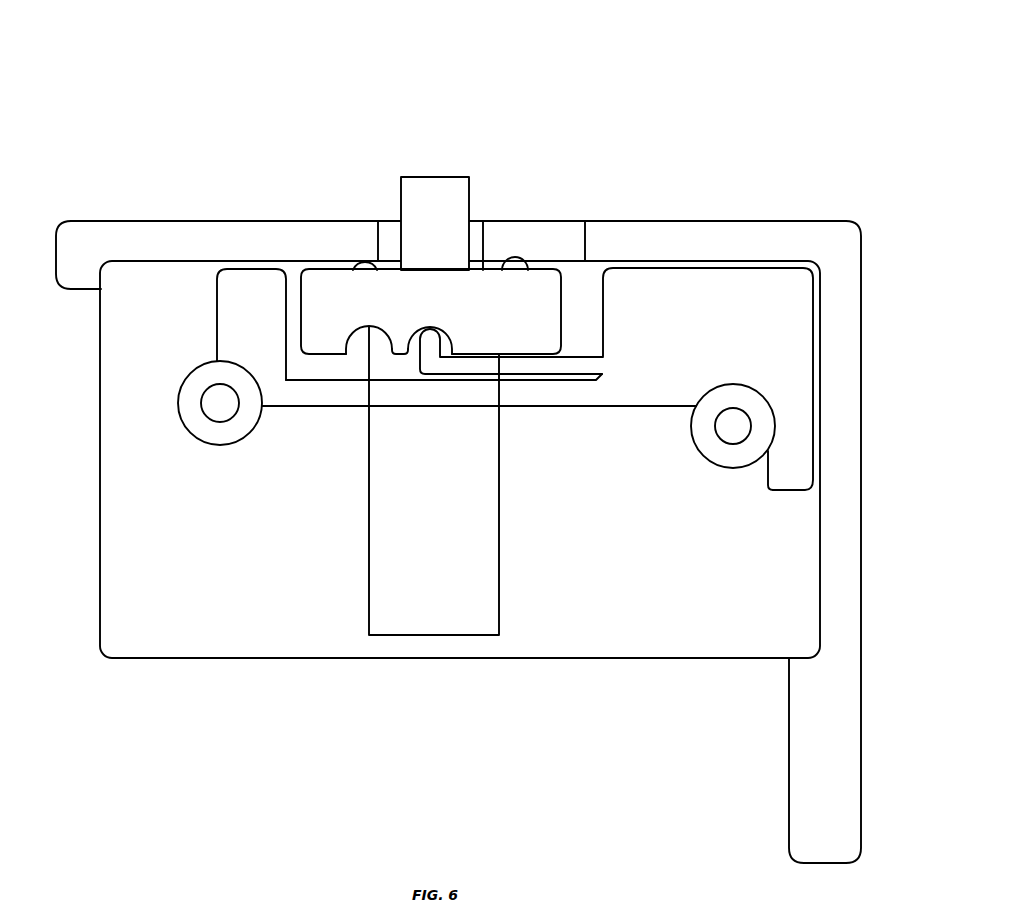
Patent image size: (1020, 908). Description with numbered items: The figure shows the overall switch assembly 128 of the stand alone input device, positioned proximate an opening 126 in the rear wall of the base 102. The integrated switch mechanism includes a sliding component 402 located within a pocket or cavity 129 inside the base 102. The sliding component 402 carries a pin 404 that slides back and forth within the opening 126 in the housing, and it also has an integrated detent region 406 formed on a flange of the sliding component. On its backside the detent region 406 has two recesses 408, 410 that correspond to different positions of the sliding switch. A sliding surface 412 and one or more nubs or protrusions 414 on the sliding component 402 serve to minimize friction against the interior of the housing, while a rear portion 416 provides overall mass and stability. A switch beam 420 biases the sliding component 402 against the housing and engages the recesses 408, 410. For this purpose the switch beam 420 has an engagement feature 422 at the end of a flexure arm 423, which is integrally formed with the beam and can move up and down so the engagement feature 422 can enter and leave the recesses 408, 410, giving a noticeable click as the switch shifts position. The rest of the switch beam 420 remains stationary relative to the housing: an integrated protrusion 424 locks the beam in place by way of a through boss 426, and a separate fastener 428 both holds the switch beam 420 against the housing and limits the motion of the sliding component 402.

The base 102 is at (704, 218).
The opening 126 is at (572, 238).
The switch assembly 128 is at (532, 60).
The cavity 129 is at (190, 658).
The sliding component 402 is at (479, 481).
The pin 404 is at (426, 193).
The detent region 406 is at (431, 311).
The recess 408 is at (342, 335).
The recess 410 is at (407, 334).
The sliding surface 412 is at (480, 260).
The protrusion 414 is at (515, 260).
The rear portion 416 is at (434, 481).
The switch beam 420 is at (515, 379).
The engagement feature 422 is at (437, 328).
The flexure arm 423 is at (571, 358).
The protrusion 424 is at (778, 490).
The through boss 426 is at (708, 448).
The fastener 428 is at (205, 440).